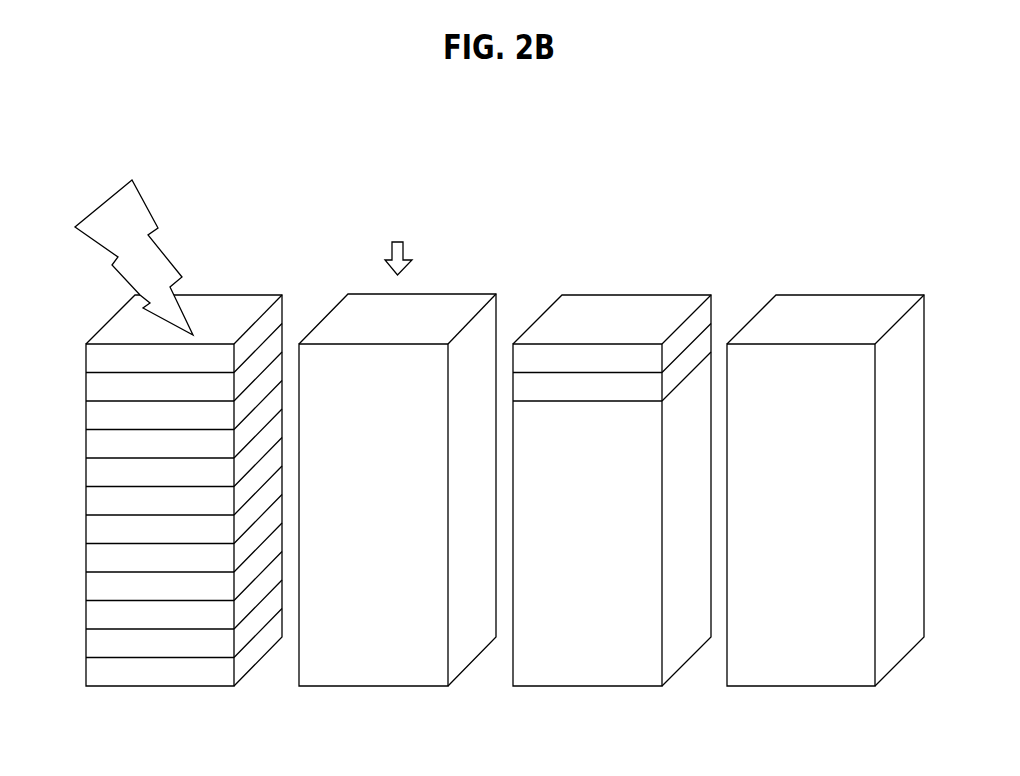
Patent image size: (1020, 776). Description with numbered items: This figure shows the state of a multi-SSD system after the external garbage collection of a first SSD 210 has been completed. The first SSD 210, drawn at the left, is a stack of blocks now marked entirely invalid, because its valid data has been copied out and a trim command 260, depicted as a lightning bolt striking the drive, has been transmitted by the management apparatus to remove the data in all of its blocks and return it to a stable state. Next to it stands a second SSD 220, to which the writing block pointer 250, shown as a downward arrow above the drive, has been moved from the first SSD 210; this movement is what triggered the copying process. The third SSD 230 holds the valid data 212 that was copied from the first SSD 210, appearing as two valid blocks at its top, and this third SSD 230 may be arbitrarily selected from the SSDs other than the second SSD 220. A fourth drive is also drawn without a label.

The first SSD 210 is at (208, 677).
The valid data 212 is at (635, 293).
The second SSD 220 is at (372, 688).
The third SSD 230 is at (586, 688).
The writing block pointer 250 is at (404, 248).
The trim command 260 is at (132, 181).